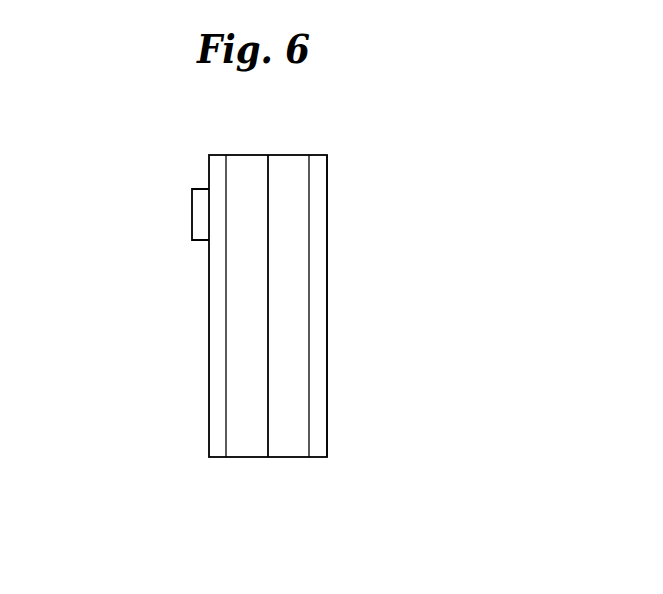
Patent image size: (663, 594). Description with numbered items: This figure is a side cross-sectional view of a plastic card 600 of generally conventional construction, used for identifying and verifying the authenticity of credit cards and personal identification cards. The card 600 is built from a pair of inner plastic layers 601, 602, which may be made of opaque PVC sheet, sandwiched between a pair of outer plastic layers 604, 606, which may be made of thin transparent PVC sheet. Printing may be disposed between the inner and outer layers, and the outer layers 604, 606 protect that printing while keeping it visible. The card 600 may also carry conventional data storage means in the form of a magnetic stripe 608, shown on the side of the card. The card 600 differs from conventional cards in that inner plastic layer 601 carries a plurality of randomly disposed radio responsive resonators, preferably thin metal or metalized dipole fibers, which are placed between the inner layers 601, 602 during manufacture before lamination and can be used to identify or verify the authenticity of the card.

The plastic card 600 is at (424, 281).
The inner plastic layer 601 is at (290, 448).
The inner plastic layer 602 is at (248, 447).
The outer plastic layer 604 is at (322, 425).
The outer plastic layer 606 is at (219, 425).
The magnetic stripe 608 is at (193, 243).